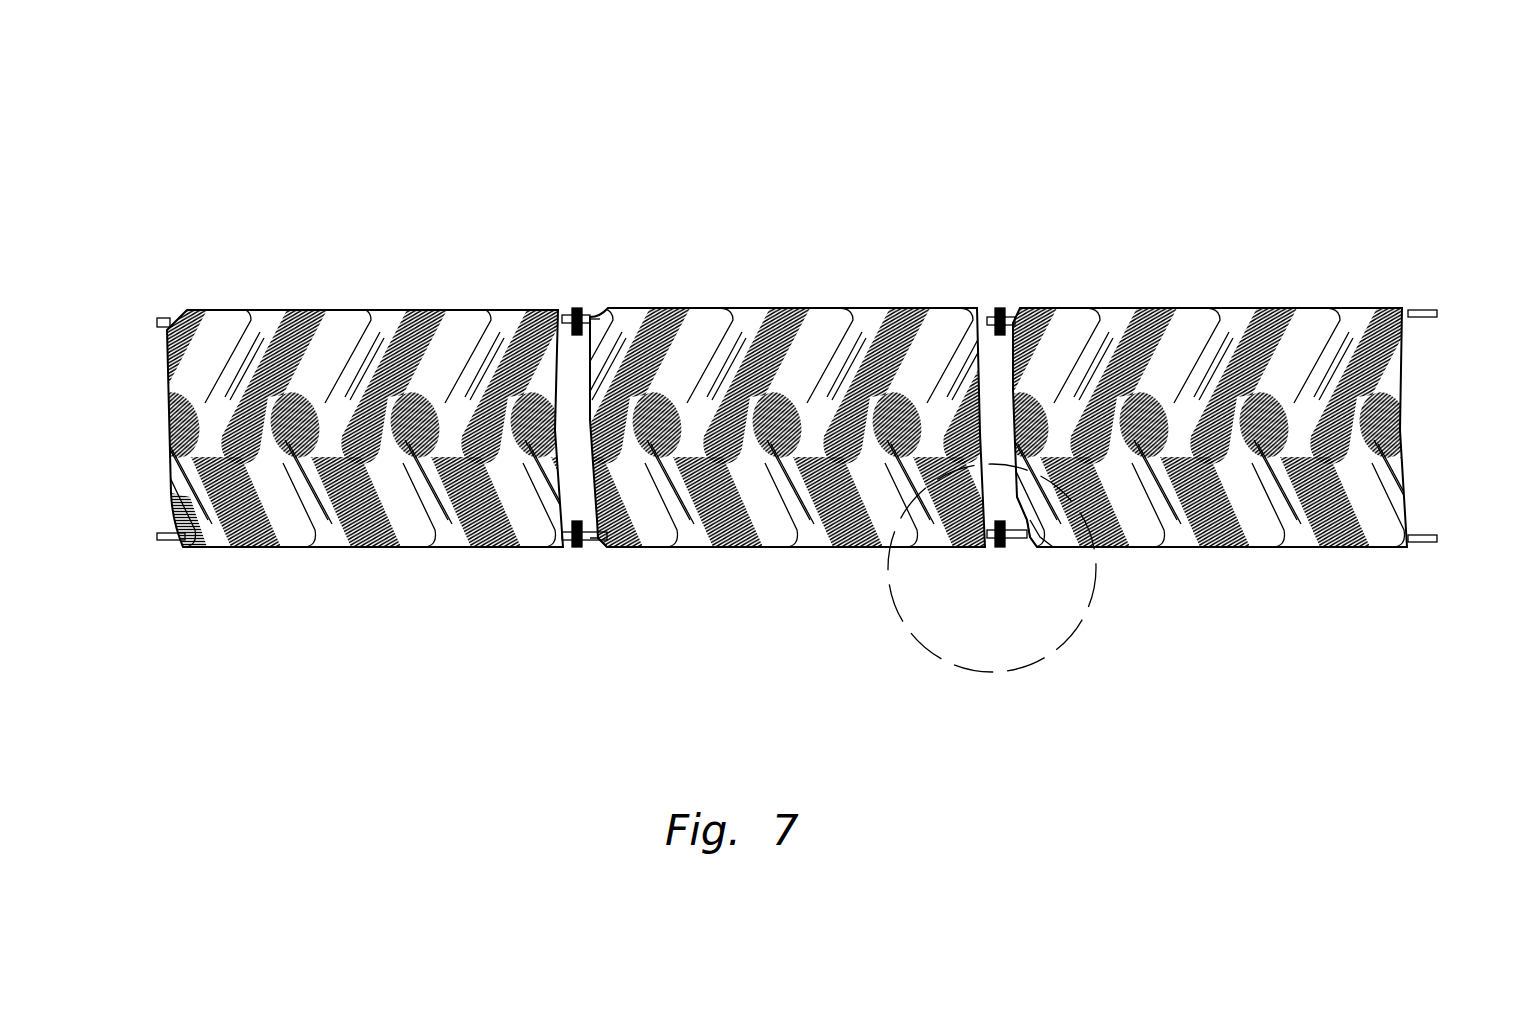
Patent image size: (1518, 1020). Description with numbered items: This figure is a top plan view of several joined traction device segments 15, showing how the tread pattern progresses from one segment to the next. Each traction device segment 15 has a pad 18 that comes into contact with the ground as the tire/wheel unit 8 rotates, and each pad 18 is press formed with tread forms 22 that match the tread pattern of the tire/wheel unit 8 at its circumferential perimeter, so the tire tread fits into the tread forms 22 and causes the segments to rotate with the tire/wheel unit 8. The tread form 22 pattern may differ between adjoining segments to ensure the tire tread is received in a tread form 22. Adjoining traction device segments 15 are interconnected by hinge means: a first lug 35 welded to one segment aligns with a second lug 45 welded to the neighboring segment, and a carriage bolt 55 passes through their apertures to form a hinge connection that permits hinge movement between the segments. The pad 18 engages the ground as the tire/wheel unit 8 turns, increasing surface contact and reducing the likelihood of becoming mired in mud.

The tire/wheel unit 8 is at (924, 665).
The traction device segment 15 is at (428, 206).
The pad 18 is at (1387, 497).
The tread form 22 is at (1133, 320).
The first lug 35 is at (567, 310).
The second lug 45 is at (168, 318).
The bolt 55 is at (578, 308).